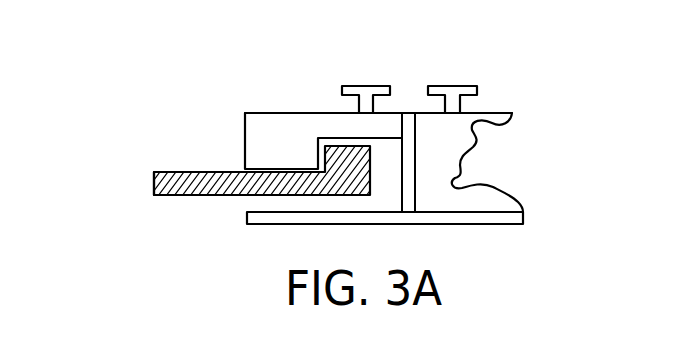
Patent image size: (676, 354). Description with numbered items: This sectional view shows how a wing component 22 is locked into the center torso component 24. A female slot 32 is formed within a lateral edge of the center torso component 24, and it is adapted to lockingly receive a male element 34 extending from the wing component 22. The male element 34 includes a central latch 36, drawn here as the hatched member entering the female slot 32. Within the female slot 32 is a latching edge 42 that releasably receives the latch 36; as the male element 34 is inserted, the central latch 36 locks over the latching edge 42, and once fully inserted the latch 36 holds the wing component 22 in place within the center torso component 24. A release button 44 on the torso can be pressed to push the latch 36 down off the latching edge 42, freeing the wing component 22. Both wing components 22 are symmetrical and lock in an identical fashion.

The center torso component 24 is at (275, 113).
The latching edge 42 is at (259, 138).
The release button 44 is at (363, 92).
The central latch 36 is at (348, 175).
The female slot 32 is at (238, 208).
The male element 34 is at (132, 221).
The wing component 22 is at (305, 349).